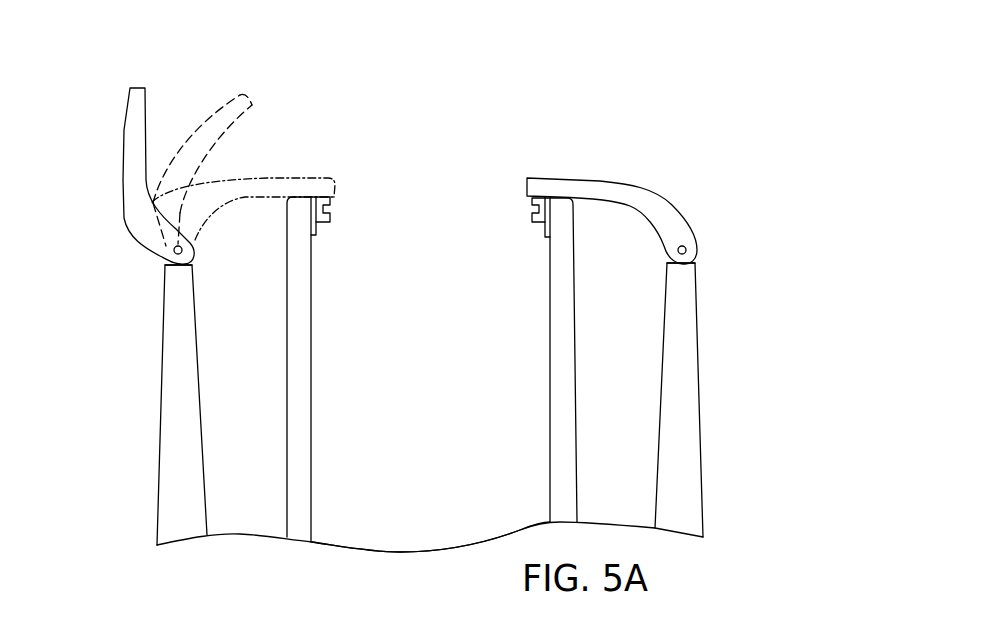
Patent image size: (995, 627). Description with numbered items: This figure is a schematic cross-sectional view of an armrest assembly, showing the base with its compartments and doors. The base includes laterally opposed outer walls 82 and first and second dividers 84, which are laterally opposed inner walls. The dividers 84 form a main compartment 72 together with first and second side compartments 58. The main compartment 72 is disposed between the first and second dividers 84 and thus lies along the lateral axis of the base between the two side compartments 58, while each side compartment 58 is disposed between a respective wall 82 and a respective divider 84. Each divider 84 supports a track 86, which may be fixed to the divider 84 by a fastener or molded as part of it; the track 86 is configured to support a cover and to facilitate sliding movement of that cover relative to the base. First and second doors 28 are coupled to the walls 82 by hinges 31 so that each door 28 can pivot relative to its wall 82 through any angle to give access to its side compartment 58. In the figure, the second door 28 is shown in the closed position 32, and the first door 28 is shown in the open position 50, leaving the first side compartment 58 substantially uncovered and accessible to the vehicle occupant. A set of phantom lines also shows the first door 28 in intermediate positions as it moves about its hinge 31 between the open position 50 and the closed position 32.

The door 28 is at (122, 131).
The hinge 31 is at (176, 252).
The closed position 32 is at (323, 174).
The open position 50 is at (119, 73).
The side compartment 58 is at (253, 416).
The main compartment 72 is at (440, 420).
The wall 82 is at (161, 404).
The divider 84 is at (312, 368).
The track 86 is at (330, 207).